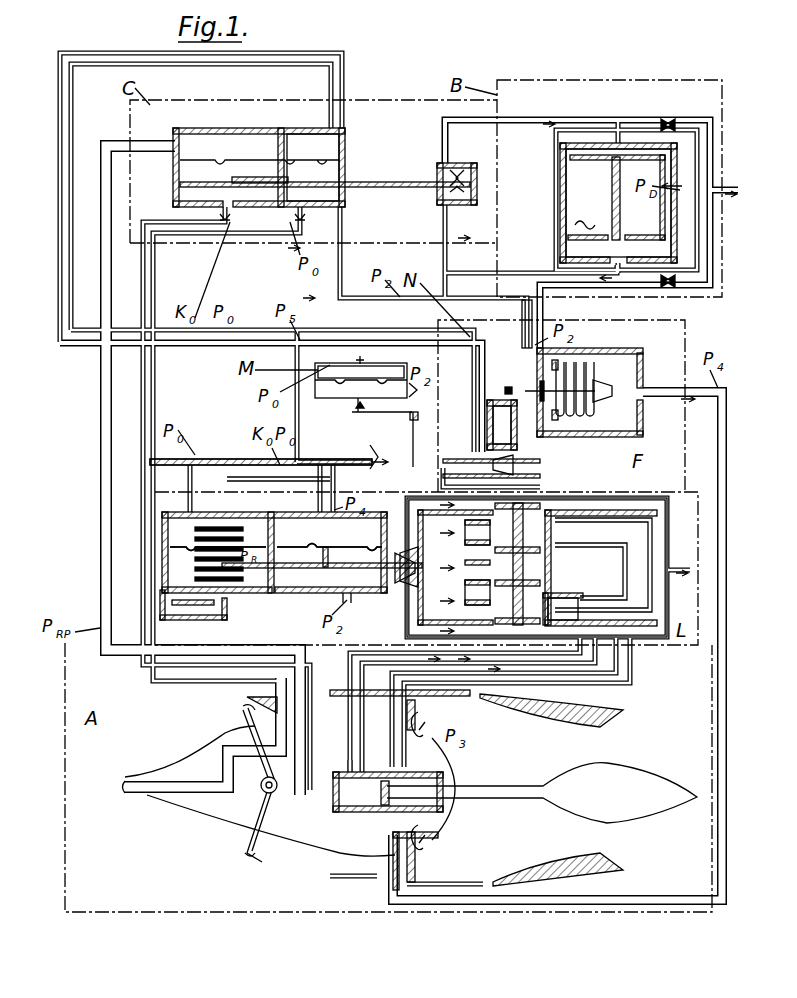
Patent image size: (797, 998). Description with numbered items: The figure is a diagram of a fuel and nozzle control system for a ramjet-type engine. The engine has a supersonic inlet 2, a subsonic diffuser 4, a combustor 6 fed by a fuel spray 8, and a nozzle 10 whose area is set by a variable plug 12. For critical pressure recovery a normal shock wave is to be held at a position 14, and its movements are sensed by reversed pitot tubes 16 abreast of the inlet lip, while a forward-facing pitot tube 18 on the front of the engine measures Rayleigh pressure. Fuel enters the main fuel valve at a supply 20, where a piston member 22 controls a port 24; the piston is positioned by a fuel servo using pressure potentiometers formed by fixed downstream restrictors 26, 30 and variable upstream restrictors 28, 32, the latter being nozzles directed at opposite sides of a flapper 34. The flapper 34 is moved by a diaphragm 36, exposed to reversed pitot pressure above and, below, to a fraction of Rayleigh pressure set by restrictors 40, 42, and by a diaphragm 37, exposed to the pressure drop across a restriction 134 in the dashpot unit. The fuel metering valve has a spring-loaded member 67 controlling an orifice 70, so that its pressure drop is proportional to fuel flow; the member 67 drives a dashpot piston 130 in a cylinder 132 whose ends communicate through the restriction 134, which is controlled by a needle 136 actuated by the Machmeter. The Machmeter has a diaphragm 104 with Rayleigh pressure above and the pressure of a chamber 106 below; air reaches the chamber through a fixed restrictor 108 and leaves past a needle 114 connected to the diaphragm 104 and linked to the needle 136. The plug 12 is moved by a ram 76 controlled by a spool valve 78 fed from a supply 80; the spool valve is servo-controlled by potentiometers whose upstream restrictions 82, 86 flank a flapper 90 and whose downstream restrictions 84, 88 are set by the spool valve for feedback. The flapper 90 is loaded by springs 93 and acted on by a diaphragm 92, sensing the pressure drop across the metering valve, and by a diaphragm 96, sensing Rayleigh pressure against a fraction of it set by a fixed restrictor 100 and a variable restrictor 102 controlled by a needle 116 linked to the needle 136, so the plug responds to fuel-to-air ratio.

The supersonic inlet 2 is at (240, 858).
The subsonic diffuser 4 is at (345, 850).
The combustor 6 is at (424, 861).
The fuel spray 8 is at (428, 840).
The nozzle 10 is at (598, 741).
The variable plug 12 is at (542, 793).
The position of the normal shock wave 14 is at (268, 860).
The reversed pitot tubes 16 is at (243, 712).
The forward-facing pitot tube 18 is at (125, 793).
The fuel supply 20 is at (660, 240).
The piston member 22 is at (620, 205).
The port 24 is at (605, 220).
The fixed downstream restrictor 26 is at (668, 119).
The variable upstream restrictor 28 is at (452, 178).
The fixed downstream restrictor 30 is at (672, 288).
The variable upstream restrictor 32 is at (455, 198).
The flapper 34 is at (415, 188).
The diaphragm 36 is at (240, 165).
The diaphragm 37 is at (340, 165).
The restrictor 40 is at (225, 222).
The downstream restrictor 42 is at (300, 222).
The spring-loaded member 67 is at (600, 360).
The orifice 70 is at (605, 396).
The ram 76 is at (380, 790).
The spool valve 78 is at (580, 530).
The supply 80 is at (470, 590).
The upstream restriction 82 is at (470, 532).
The downstream restriction 84 is at (545, 498).
The upstream restriction 86 is at (405, 580).
The downstream restriction 88 is at (563, 609).
The flapper 90 is at (370, 568).
The diaphragm 92 is at (310, 560).
The springs 93 is at (205, 528).
The diaphragm 96 is at (360, 548).
The fixed restrictor 100 is at (200, 468).
The variable downstream restrictor 102 is at (320, 483).
The diaphragm 104 is at (340, 385).
The chamber 106 is at (395, 392).
The fixed restrictor 108 is at (505, 391).
The needle 114 is at (372, 462).
The needle 116 is at (380, 462).
The dashpot piston 130 is at (500, 402).
The cylinder 132 is at (505, 372).
The restriction 134 is at (493, 447).
The needle 136 is at (515, 465).